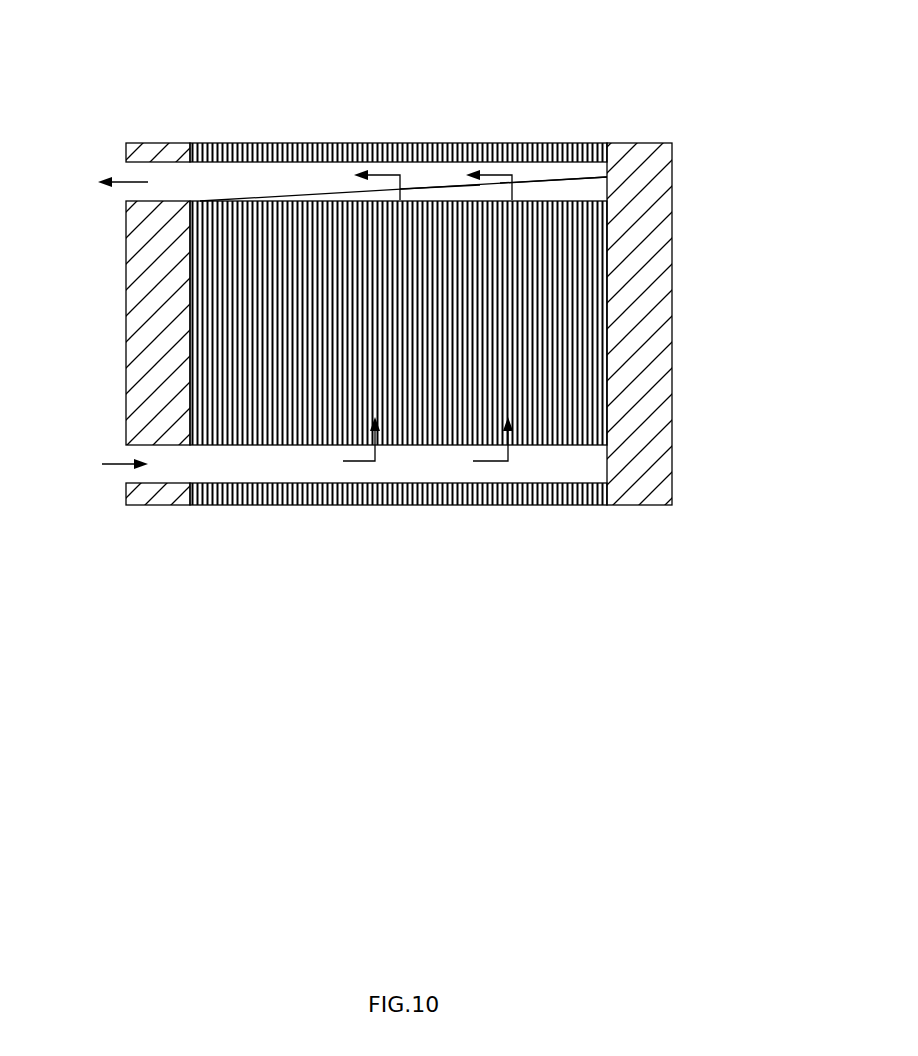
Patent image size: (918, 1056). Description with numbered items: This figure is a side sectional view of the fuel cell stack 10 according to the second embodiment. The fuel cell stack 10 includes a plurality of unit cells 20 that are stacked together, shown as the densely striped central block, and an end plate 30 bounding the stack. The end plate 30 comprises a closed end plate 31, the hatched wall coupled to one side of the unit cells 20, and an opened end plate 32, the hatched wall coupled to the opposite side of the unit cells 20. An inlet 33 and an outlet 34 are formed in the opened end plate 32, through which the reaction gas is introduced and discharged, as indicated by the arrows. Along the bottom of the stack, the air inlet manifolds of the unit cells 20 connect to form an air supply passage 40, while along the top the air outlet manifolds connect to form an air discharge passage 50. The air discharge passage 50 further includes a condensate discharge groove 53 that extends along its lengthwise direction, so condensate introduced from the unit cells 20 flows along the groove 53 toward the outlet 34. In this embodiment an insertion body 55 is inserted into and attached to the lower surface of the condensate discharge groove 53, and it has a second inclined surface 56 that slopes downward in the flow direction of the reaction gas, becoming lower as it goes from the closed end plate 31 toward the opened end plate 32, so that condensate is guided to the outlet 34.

The fuel cell stack 10 is at (199, 80).
The unit cells 20 is at (587, 232).
The end plate 30 is at (696, 213).
The closed end plate 31 is at (655, 310).
The opened end plate 32 is at (141, 310).
The inlet 33 is at (126, 480).
The outlet 34 is at (126, 194).
The air supply passage 40 is at (424, 471).
The air discharge passage 50 is at (423, 175).
The condensate discharge groove 53 is at (332, 200).
The insertion body 55 is at (541, 190).
The second inclined surface 56 is at (443, 193).